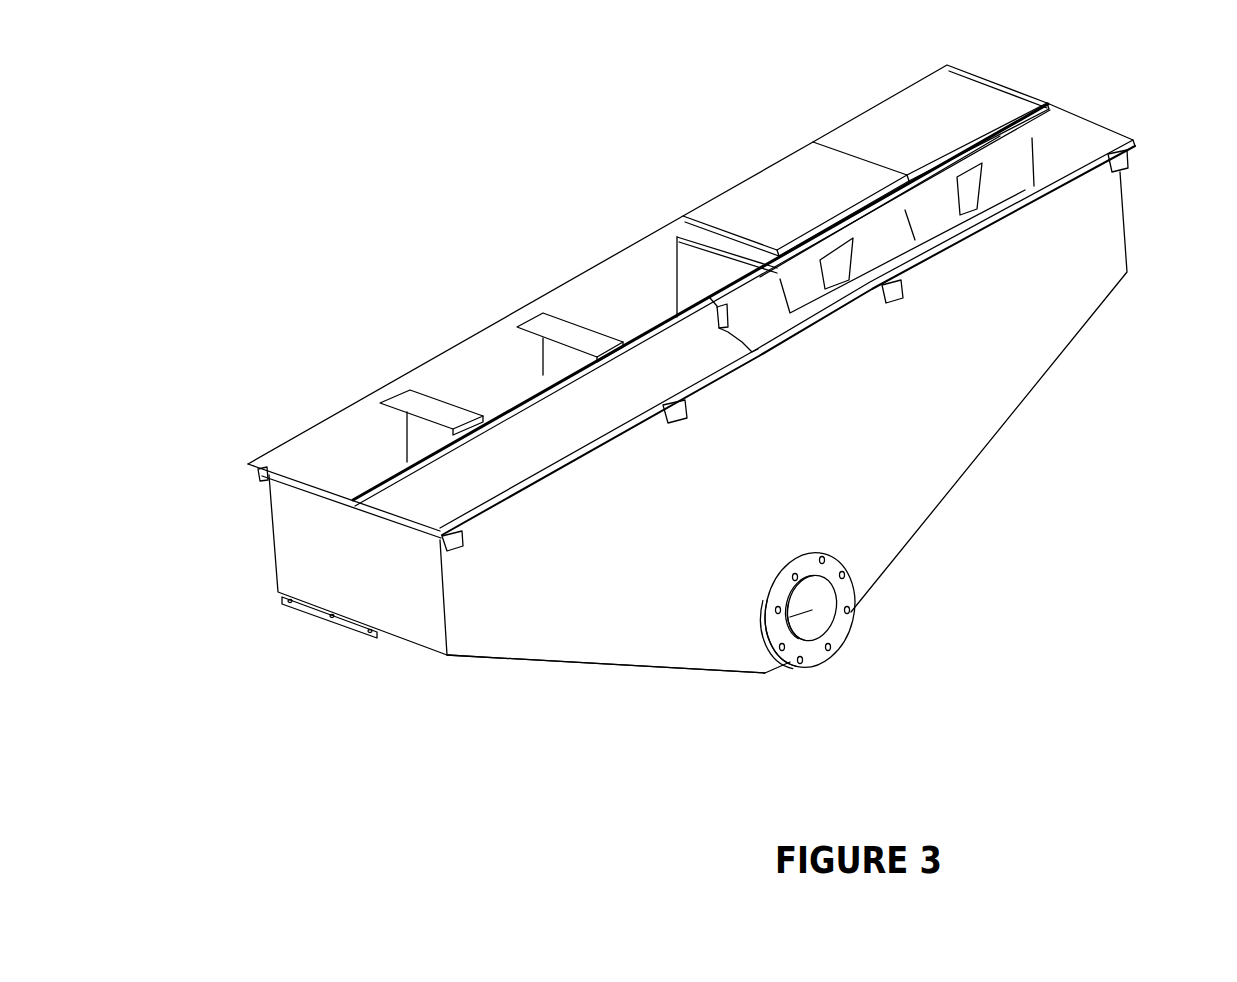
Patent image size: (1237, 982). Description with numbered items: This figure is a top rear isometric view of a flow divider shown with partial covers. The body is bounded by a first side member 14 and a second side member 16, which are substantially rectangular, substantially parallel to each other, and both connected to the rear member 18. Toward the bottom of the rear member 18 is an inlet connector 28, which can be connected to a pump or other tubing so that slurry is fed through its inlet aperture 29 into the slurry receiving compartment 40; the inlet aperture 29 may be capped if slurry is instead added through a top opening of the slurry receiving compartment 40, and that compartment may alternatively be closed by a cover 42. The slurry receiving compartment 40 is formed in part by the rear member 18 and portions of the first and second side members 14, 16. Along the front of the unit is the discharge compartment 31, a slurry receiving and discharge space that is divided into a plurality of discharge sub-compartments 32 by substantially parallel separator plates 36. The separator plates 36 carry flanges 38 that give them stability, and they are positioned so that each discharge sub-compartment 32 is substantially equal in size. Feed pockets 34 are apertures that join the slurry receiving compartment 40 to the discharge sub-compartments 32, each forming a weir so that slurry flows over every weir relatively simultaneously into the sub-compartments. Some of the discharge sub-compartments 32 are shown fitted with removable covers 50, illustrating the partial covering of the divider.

The first side member 14 is at (1042, 181).
The second side member 16 is at (312, 533).
The rear member 18 is at (635, 615).
The inlet connector 28 is at (815, 655).
The inlet aperture 29 is at (823, 608).
The discharge compartment 31 is at (506, 289).
The discharge sub-compartments 32 is at (323, 460).
The feed pockets 34 is at (798, 283).
The separator plates 36 is at (440, 438).
The flanges 38 is at (467, 420).
The slurry receiving compartment 40 is at (1070, 130).
The cover 42 is at (697, 358).
The removable covers 50 is at (950, 117).